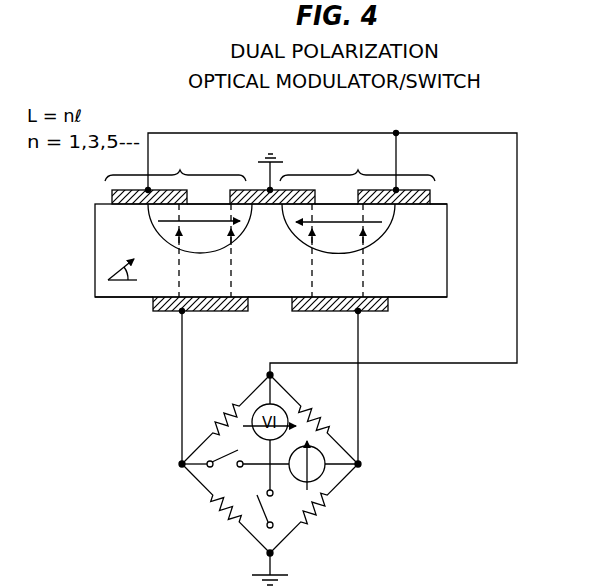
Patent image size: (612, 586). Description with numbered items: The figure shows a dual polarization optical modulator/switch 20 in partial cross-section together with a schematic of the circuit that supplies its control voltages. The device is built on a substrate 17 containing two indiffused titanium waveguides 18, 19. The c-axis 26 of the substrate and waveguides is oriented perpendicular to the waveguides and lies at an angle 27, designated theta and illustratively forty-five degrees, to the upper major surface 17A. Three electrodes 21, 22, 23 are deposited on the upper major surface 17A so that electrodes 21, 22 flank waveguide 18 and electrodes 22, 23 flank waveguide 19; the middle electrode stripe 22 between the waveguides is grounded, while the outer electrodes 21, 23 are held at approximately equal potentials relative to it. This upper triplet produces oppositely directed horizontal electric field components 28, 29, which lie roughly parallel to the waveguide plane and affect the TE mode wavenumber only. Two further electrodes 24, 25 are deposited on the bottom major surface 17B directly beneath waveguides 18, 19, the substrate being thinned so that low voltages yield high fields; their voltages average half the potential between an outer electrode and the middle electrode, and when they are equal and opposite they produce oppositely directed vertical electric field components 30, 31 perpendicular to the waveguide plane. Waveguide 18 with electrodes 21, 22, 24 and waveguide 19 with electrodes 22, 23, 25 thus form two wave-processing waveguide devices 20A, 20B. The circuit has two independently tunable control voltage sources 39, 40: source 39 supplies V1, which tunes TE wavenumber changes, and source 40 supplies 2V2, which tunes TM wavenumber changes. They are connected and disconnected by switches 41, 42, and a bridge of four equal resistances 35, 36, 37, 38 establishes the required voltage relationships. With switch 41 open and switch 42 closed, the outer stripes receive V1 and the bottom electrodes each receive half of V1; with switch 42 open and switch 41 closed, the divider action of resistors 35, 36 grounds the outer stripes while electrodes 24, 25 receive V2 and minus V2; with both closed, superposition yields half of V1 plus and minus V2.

The substrate 17 is at (447, 250).
The upper major surface 17A is at (432, 205).
The bottom major surface 17B is at (447, 297).
The waveguide 18 is at (158, 230).
The waveguide 19 is at (380, 228).
The dual polarization optical modulator/switch 20 is at (343, 118).
The wave-processing waveguide device 20A is at (198, 163).
The wave-processing waveguide device 20B is at (373, 163).
The electrode 21 is at (112, 196).
The middle electrode stripe 22 is at (230, 192).
The electrode 23 is at (358, 192).
The electrode 24 is at (220, 312).
The electrode 25 is at (317, 313).
The c-axis 26 is at (108, 278).
The angle 27 is at (136, 283).
The horizontal electric field component 28 is at (252, 238).
The horizontal electric field component 29 is at (292, 238).
The vertical electric field component 30 is at (231, 272).
The vertical electric field component 31 is at (312, 272).
The resistance 35 is at (228, 400).
The resistance 36 is at (314, 400).
The resistance 37 is at (333, 516).
The resistance 38 is at (211, 511).
The control voltage source 39 is at (264, 397).
The control voltage source 40 is at (324, 474).
The switch 41 is at (224, 473).
The switch 42 is at (272, 508).